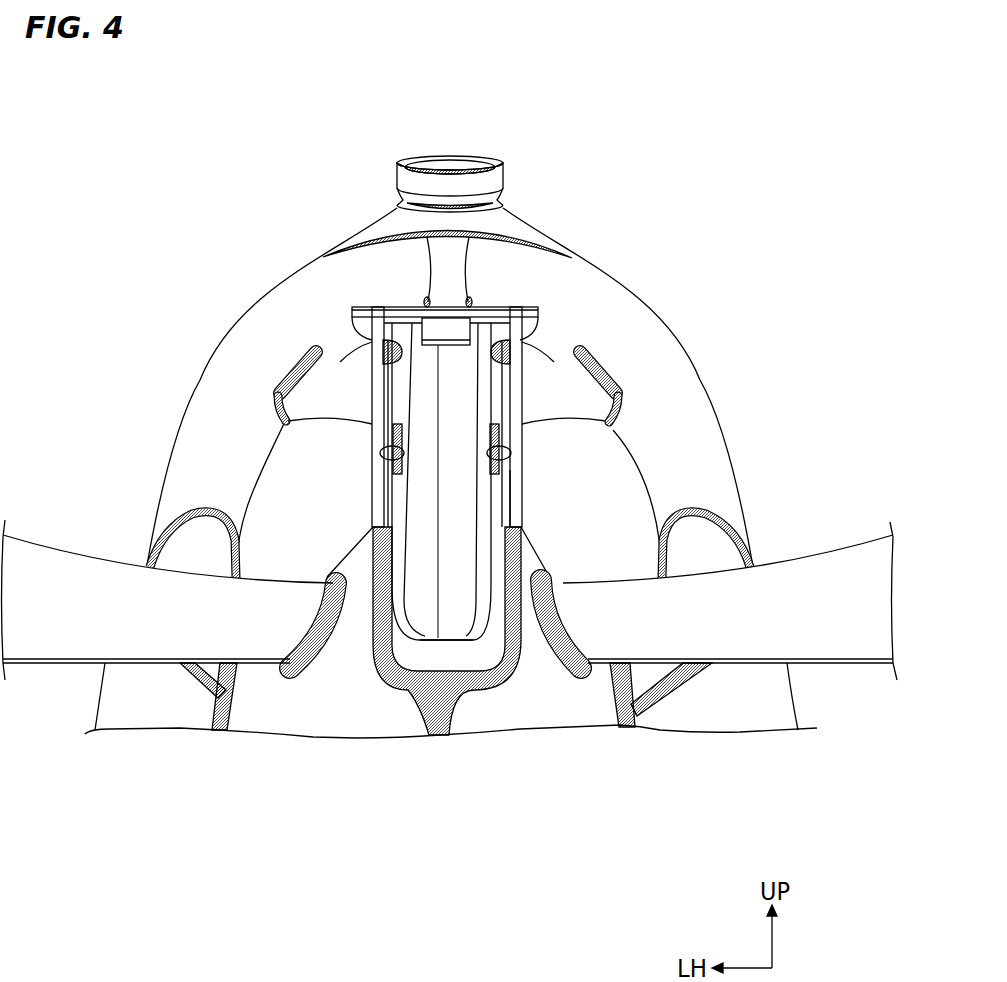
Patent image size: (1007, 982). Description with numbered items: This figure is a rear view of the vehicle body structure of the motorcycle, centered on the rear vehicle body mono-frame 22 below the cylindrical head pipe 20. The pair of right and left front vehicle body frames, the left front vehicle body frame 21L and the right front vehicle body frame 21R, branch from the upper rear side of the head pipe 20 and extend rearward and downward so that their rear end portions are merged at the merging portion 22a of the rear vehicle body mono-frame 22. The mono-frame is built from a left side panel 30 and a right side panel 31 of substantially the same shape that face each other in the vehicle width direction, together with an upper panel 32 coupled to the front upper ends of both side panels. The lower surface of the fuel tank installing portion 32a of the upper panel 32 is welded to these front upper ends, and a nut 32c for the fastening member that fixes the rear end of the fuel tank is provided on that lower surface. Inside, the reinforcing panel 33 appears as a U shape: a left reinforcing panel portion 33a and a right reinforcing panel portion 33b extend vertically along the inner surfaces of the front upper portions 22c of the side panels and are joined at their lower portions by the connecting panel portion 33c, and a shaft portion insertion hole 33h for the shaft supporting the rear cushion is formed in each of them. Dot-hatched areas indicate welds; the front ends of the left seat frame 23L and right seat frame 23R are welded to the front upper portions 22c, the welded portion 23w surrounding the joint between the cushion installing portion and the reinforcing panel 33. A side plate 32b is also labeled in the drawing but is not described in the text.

The head pipe 20 is at (500, 199).
The left front vehicle body frame 21L is at (200, 402).
The right front vehicle body frame 21R is at (686, 396).
The rear vehicle body mono-frame 22 is at (471, 642).
The merging portion 22a is at (253, 710).
The front upper portion 22c is at (514, 487).
The left seat frame 23L is at (70, 557).
The right seat frame 23R is at (815, 560).
The welded portion 23w is at (325, 640).
The left side panel 30 is at (347, 710).
The right side panel 31 is at (517, 697).
The upper panel 32 is at (491, 317).
The fuel tank installing portion 32a is at (493, 310).
The holder side plate 32b is at (530, 340).
The nut 32c is at (446, 328).
The reinforcing panel 33 is at (452, 564).
The left reinforcing panel portion 33a is at (392, 402).
The right reinforcing panel portion 33b is at (607, 367).
The connecting panel portion 33c is at (455, 660).
The shaft portion insertion hole 33h is at (392, 455).